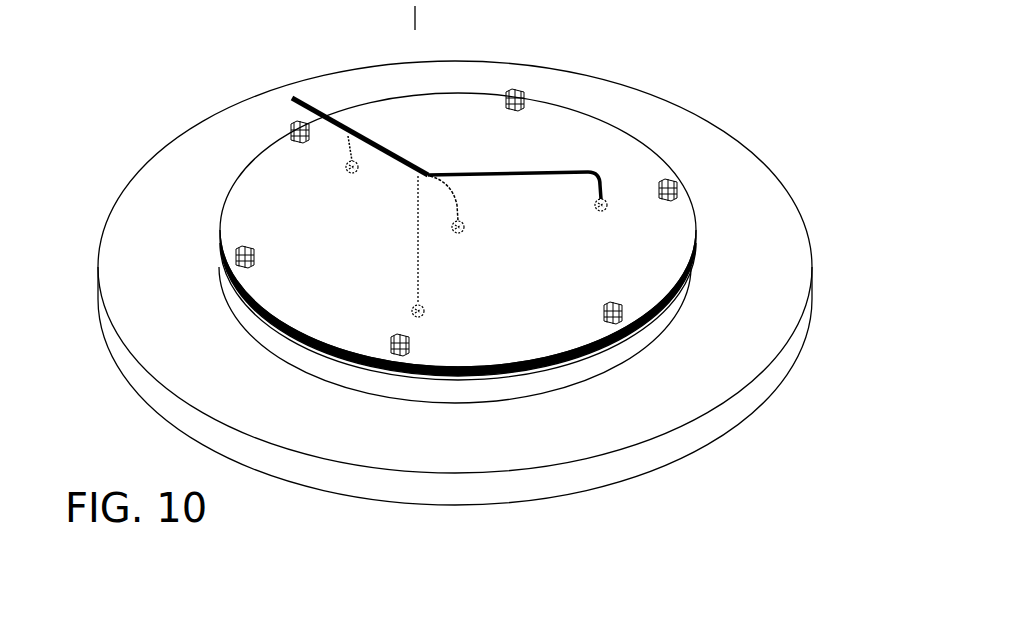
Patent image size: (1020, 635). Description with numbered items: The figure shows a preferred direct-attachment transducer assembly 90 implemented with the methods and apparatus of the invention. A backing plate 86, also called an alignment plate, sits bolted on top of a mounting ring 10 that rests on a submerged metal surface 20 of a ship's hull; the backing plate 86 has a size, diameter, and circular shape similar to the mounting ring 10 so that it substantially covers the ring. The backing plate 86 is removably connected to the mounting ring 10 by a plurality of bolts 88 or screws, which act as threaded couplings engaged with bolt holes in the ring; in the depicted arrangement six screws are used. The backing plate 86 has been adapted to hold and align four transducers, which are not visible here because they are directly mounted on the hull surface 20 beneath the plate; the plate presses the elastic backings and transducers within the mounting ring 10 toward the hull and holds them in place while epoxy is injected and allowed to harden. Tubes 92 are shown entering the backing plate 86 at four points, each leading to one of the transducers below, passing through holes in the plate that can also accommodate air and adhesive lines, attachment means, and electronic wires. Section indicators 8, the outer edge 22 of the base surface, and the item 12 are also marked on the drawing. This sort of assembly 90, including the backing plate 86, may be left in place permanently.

The section line 8- 8 is at (542, 215).
The mounting ring 10 is at (572, 375).
The housing 12 is at (303, 8).
The submerged metal surface 20 is at (707, 373).
The outer edge of base plate 22 is at (703, 430).
The backing plate 86 is at (280, 177).
The bolts 88 is at (668, 185).
The assembly 90 is at (104, 193).
The tubes 92 is at (388, 177).